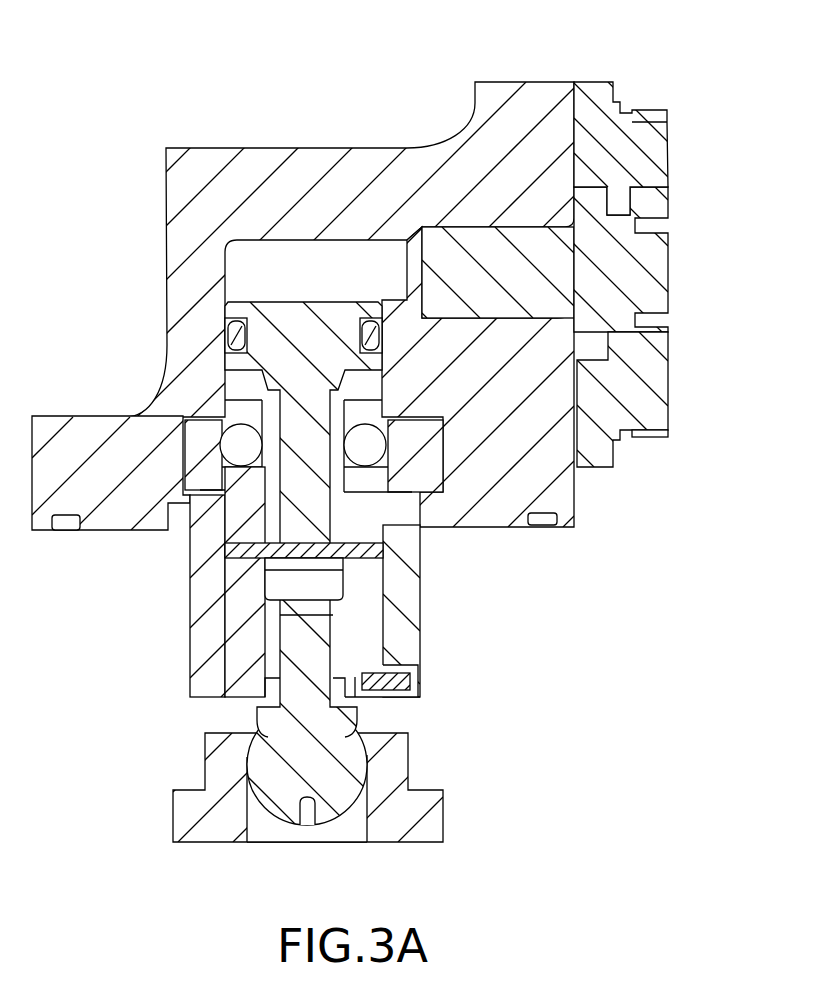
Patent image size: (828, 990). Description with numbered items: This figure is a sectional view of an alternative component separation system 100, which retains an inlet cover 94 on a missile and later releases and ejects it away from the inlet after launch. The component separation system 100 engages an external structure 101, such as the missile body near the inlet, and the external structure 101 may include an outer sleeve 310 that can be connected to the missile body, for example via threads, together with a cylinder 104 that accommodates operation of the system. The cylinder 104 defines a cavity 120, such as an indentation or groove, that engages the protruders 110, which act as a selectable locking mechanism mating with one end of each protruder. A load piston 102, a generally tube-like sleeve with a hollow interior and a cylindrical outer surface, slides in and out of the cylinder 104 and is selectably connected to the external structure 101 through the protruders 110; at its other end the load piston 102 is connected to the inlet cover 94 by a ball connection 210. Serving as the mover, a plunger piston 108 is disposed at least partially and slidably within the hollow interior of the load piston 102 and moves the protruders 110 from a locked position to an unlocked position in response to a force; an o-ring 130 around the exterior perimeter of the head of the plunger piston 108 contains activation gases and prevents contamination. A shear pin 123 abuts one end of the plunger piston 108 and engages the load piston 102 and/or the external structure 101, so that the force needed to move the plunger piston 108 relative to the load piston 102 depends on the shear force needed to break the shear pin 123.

The component separation system 100 is at (298, 125).
The external structure 101 is at (197, 235).
The o-ring 130 is at (227, 322).
The plunger piston 108 is at (300, 373).
The protruders 110 is at (225, 430).
The cavity 120 is at (393, 475).
The shear pin 123 is at (300, 487).
The outer sleeve 310 is at (403, 607).
The cylinder 104 is at (205, 605).
The load piston 102 is at (255, 638).
The ball connection 210 is at (280, 760).
The inlet cover 94 is at (193, 817).